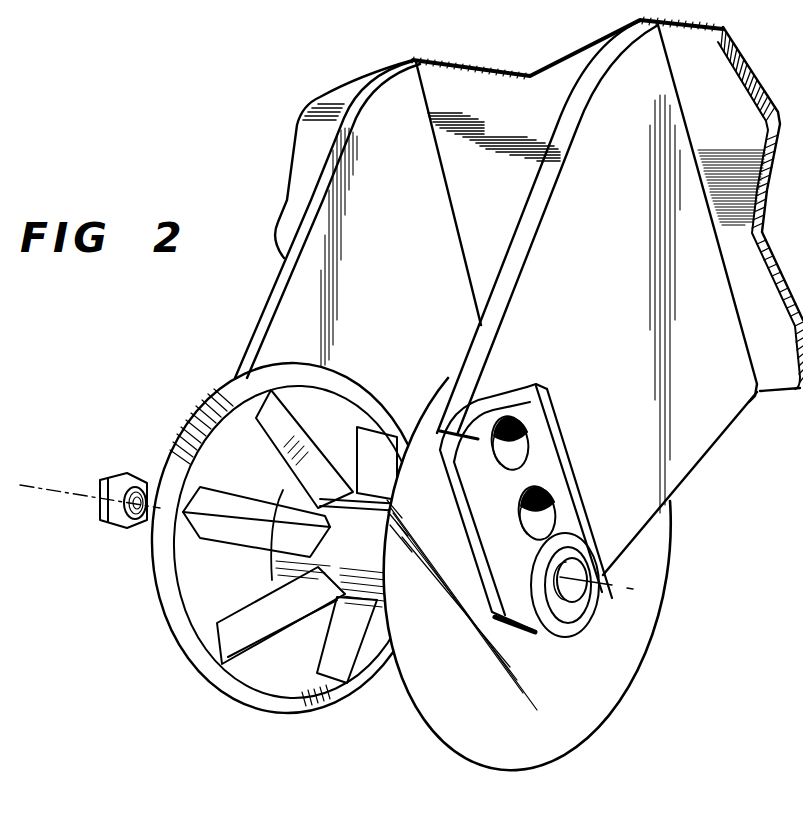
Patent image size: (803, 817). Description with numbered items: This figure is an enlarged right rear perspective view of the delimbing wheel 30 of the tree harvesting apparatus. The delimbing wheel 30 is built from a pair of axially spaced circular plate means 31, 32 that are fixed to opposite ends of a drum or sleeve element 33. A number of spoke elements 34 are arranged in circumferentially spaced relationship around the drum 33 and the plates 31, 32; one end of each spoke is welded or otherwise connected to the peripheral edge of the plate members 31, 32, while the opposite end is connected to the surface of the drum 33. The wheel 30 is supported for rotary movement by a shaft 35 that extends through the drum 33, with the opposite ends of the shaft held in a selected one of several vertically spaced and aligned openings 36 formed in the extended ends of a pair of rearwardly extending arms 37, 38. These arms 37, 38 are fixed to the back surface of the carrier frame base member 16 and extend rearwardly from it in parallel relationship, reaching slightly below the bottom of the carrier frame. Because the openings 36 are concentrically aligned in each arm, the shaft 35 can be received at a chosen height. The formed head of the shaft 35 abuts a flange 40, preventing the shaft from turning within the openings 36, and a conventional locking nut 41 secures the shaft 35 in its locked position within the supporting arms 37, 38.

The carrier frame base member 16 is at (510, 137).
The delimbing wheel 30 is at (423, 737).
The circular plate means 31 is at (485, 676).
The circular plate means 32 is at (225, 585).
The drum or sleeve element 33 is at (362, 538).
The spoke elements 34 is at (357, 430).
The shaft 35 is at (573, 573).
The openings 36 is at (527, 437).
The arm 37 is at (655, 248).
The arm 38 is at (400, 197).
The flange 40 is at (570, 503).
The locking nut 41 is at (100, 520).